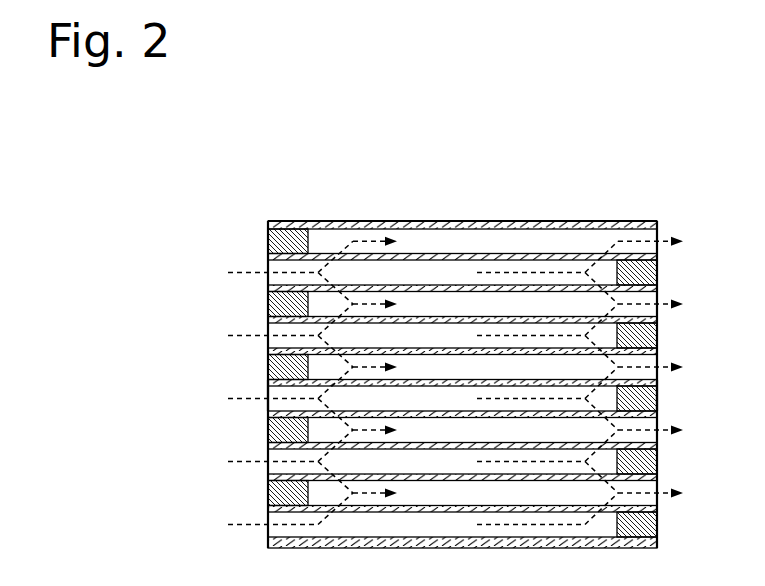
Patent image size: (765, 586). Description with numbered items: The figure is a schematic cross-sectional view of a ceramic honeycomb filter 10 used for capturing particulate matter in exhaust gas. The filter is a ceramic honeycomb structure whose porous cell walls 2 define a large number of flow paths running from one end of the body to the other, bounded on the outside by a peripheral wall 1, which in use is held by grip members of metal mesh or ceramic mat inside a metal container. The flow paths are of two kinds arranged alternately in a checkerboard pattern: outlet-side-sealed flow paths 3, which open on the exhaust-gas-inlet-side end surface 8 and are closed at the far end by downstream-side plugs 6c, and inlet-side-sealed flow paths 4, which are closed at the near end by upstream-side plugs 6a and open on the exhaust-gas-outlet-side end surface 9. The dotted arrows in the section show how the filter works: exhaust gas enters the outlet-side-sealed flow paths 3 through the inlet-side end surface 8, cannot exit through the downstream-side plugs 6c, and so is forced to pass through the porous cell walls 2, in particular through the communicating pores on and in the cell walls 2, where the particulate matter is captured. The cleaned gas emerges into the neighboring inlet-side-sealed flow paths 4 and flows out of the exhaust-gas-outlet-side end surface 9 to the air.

The ceramic honeycomb filter 10 is at (269, 185).
The peripheral wall 1 is at (346, 228).
The porous cell walls 2 is at (545, 257).
The outlet-side-sealed flow paths 3 is at (416, 272).
The inlet-side-sealed flow paths 4 is at (475, 306).
The upstream-side plugs 6a is at (279, 306).
The downstream-side plugs 6c is at (640, 333).
The exhaust-gas-inlet-side end surface 8 is at (268, 392).
The exhaust-gas-outlet-side end surface 9 is at (658, 378).